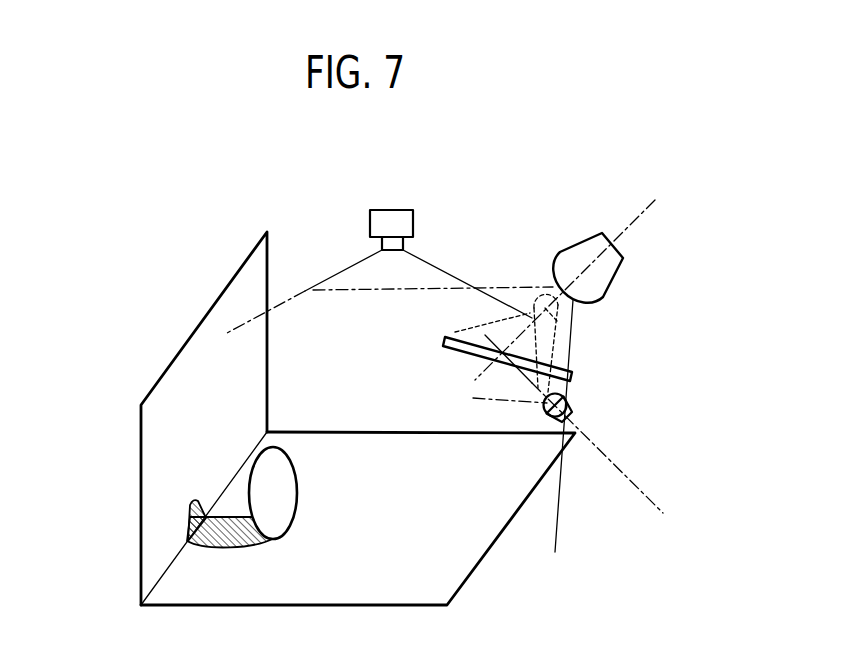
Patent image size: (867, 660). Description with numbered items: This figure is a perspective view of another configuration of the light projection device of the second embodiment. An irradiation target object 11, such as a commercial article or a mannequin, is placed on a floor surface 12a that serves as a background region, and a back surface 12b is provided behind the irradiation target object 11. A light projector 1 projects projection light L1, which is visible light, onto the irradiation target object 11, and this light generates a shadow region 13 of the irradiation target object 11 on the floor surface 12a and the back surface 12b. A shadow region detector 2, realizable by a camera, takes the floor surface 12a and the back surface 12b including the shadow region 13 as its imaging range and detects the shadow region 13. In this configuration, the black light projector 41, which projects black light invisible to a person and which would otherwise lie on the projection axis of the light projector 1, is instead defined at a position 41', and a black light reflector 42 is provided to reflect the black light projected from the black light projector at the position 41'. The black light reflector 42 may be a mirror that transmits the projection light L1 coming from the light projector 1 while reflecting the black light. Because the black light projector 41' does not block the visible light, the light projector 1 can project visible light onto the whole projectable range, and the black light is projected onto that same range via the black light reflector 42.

The light projector 1 is at (613, 273).
The shadow region detector 2 is at (370, 221).
The irradiation target object 11 is at (287, 477).
The floor surface 12a is at (347, 436).
The back surface 12b is at (258, 378).
The shadow region 13 is at (227, 548).
The black light projector 41 is at (506, 312).
The black light projector position 41' is at (568, 448).
The black light reflector 42 is at (562, 368).
The projection light L1 is at (557, 515).